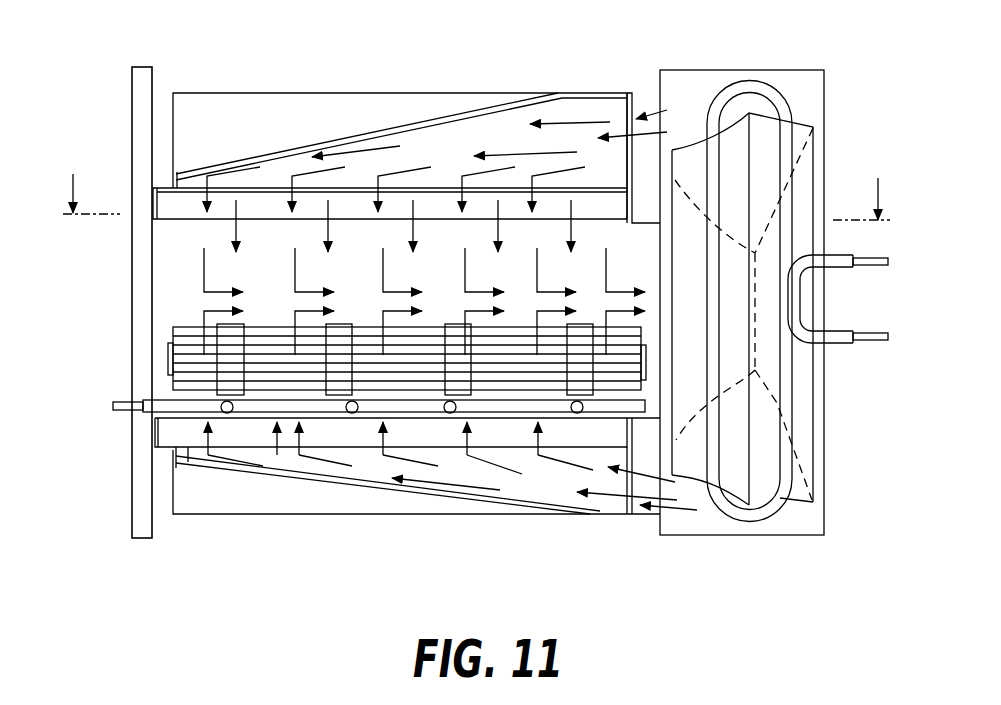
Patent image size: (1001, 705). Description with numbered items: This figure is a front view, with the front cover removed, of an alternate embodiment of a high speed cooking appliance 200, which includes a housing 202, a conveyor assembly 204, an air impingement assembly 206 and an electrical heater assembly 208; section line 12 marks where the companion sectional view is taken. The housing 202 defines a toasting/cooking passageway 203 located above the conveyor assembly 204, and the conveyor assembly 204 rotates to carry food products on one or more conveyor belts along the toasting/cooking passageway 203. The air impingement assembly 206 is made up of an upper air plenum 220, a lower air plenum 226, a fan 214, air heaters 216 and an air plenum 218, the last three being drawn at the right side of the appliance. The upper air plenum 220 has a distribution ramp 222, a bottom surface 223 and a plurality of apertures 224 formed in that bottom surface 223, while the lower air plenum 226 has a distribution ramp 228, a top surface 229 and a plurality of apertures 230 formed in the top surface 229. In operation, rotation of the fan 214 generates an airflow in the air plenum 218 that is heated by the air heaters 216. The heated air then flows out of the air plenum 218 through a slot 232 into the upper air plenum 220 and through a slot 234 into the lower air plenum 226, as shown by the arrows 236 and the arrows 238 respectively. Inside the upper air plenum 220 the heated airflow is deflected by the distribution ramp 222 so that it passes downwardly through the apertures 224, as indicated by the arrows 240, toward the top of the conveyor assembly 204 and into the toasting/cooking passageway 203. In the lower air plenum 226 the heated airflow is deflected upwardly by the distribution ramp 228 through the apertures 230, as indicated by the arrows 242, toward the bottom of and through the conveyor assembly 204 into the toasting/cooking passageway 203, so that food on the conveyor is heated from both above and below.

The high speed cooking appliance 200 is at (163, 585).
The housing 202 is at (130, 112).
The toasting/cooking passageway 203 is at (270, 298).
The conveyor assembly 204 is at (167, 327).
The air impingement assembly 206 is at (616, 88).
The electrical heater assembly 208 is at (277, 415).
The section line 12 is at (476, 184).
The fan 214 is at (818, 155).
The air heaters 216 is at (750, 88).
The air plenum 218 is at (802, 92).
The upper air plenum 220 is at (457, 91).
The distribution ramp 222 is at (273, 145).
The bottom surface 223 is at (441, 190).
The apertures 224 is at (383, 198).
The lower air plenum 226 is at (405, 524).
The distribution ramp 228 is at (340, 494).
The top surface 229 is at (185, 462).
The apertures 230 is at (538, 458).
The slot 232 is at (636, 120).
The slot 234 is at (660, 508).
The arrows 236 is at (572, 122).
The arrows 238 is at (603, 494).
The arrows 240 is at (415, 235).
The arrows 242 is at (303, 433).